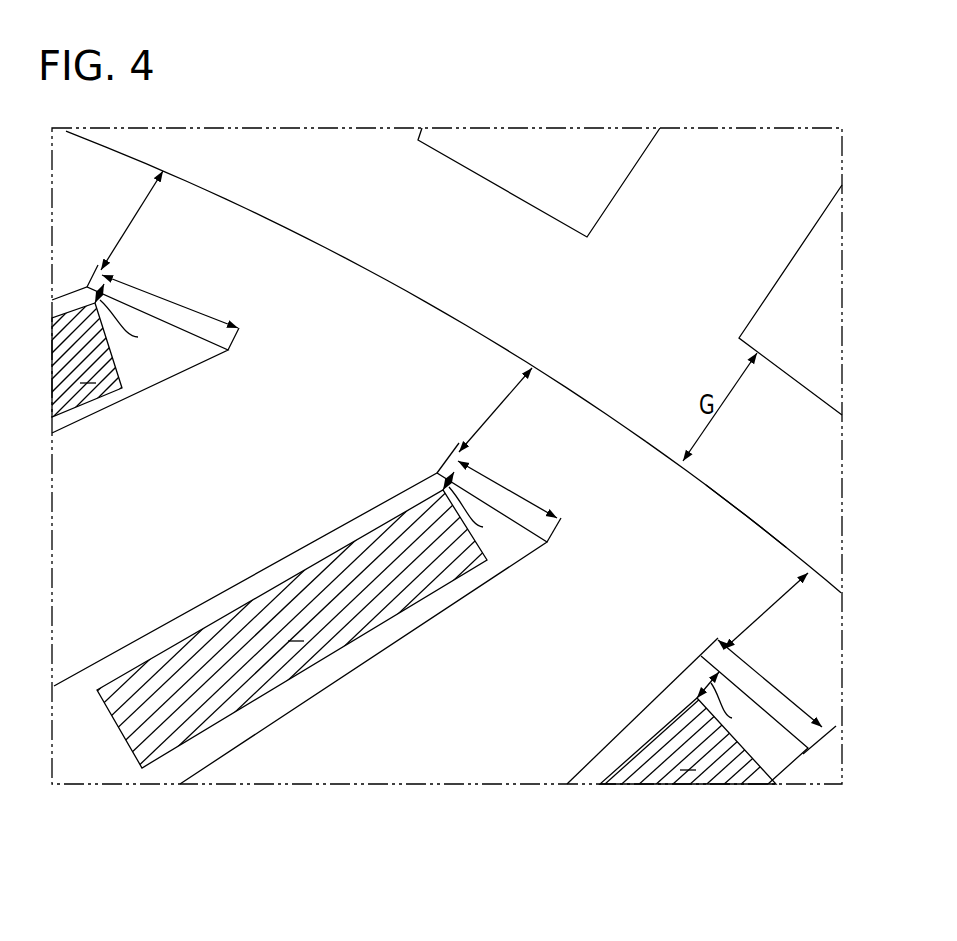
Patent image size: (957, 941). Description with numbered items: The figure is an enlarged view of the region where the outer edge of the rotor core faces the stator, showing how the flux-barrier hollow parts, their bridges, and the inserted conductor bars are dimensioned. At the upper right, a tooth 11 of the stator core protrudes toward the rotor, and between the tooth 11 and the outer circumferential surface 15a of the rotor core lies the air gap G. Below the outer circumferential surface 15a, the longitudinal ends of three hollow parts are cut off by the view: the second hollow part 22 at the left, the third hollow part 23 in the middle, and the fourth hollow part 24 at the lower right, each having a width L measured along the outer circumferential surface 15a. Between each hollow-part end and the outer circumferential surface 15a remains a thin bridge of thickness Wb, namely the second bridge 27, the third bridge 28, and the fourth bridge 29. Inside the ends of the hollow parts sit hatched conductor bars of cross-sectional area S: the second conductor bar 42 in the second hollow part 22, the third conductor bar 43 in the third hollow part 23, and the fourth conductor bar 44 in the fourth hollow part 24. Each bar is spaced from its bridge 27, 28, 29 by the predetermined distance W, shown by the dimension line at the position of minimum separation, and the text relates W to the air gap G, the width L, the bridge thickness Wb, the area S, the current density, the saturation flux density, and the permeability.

The teeth 11 is at (777, 275).
The outer circumferential surface 15a is at (743, 510).
The second hollow part 22 is at (170, 374).
The third hollow part 23 is at (273, 705).
The fourth hollow part 24 is at (790, 757).
The second bridge 27 is at (219, 218).
The third bridge 28 is at (573, 415).
The fourth bridge 29 is at (828, 590).
The second conductor bar 42 is at (70, 395).
The third conductor bar 43 is at (355, 625).
The fourth conductor bar 44 is at (647, 755).